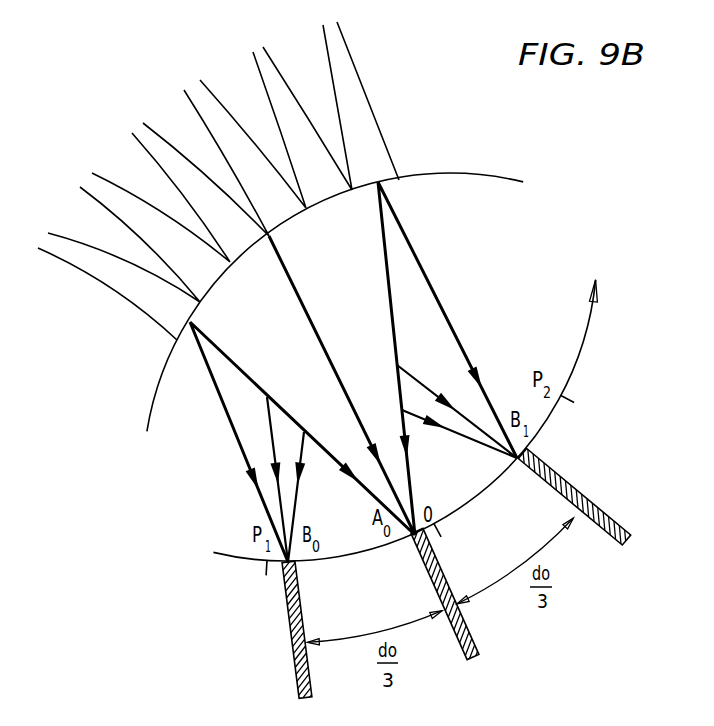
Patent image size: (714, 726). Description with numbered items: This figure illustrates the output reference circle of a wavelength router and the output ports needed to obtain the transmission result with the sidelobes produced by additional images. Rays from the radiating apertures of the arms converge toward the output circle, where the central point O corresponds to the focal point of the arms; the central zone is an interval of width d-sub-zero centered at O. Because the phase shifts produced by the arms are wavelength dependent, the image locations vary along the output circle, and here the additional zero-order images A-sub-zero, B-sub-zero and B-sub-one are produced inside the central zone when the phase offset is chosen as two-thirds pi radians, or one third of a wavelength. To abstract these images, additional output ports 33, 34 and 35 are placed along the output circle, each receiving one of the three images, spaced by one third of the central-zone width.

The additional output port 33 is at (568, 503).
The additional output port 34 is at (445, 577).
The additional output port 35 is at (287, 620).